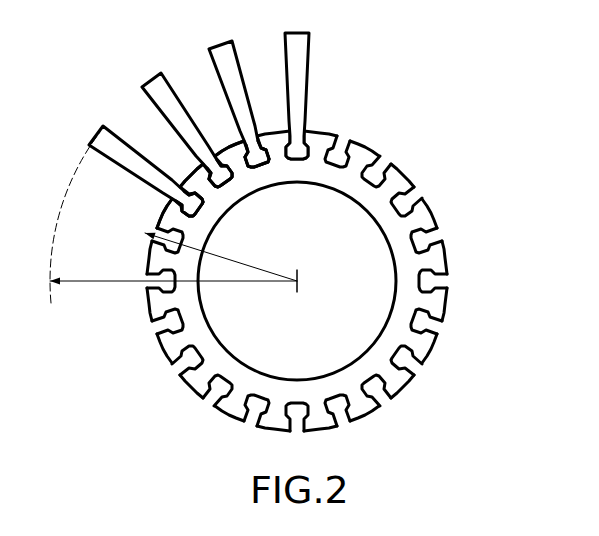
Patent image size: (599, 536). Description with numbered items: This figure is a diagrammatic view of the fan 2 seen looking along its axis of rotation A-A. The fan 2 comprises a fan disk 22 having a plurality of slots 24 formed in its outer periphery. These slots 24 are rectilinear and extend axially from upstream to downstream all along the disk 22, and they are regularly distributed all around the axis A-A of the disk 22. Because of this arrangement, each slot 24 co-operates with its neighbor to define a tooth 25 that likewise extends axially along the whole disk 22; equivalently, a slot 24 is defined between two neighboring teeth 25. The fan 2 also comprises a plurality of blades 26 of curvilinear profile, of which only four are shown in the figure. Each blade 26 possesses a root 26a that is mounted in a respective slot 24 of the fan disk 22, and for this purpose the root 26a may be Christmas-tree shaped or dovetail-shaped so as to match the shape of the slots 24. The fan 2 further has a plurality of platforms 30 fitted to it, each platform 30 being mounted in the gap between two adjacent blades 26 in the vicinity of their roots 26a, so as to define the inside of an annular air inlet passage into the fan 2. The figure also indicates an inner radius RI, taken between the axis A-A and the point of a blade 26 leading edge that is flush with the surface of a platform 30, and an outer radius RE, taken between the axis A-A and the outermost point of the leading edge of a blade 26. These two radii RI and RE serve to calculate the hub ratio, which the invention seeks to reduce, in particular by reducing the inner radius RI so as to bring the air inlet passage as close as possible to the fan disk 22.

The fan 2 is at (295, 261).
The fan disk 22 is at (213, 332).
The slots 24 is at (428, 281).
The tooth 25 is at (404, 388).
The blades 26 is at (199, 134).
The root 26a is at (260, 160).
The platform 30 is at (188, 176).
The outer radius RE is at (106, 281).
The inner radius RI is at (221, 257).
The axis A is at (299, 280).